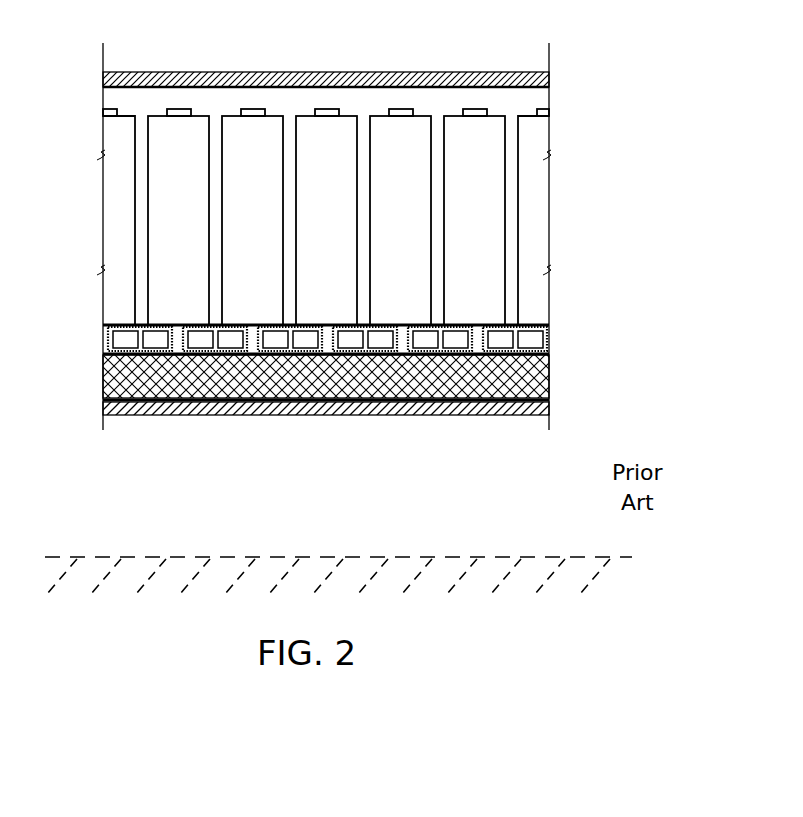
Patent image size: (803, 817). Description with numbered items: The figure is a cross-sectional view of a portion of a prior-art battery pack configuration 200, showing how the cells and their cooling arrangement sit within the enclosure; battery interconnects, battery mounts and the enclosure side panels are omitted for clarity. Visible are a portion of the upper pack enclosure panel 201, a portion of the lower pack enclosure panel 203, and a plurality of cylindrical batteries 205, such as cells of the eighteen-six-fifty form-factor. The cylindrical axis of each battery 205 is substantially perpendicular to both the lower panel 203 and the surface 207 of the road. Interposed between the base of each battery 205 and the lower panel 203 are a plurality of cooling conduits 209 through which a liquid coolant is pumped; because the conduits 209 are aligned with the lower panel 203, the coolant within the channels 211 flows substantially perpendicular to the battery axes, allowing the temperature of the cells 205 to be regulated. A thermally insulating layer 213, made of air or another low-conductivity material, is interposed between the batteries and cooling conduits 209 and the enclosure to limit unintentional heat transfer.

The battery pack configuration 200 is at (592, 65).
The upper pack enclosure panel 201 is at (222, 72).
The lower pack enclosure panel 203 is at (372, 415).
The batteries 205 is at (157, 224).
The surface of the road 207 is at (313, 559).
The cooling conduits 209 is at (215, 335).
The channels 211 is at (425, 337).
The thermally insulating layer 213 is at (108, 382).